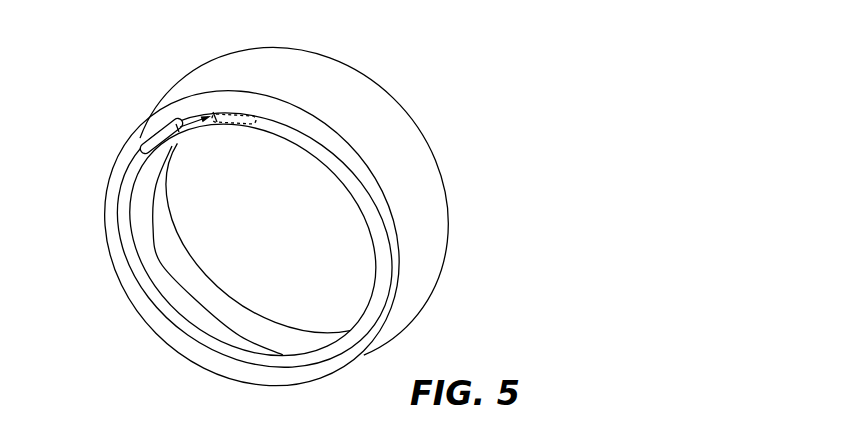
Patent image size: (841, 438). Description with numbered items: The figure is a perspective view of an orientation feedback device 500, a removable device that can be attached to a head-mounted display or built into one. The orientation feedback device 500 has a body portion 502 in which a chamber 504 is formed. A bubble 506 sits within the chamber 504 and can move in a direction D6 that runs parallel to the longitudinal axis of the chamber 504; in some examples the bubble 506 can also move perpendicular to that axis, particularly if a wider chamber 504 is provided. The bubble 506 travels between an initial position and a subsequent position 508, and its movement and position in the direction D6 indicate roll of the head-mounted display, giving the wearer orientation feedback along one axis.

The orientation feedback device 500 is at (259, 223).
The body portion 502 is at (112, 193).
The chamber 504 is at (165, 305).
The bubble 506 is at (150, 142).
The subsequent position 508 is at (240, 118).
The direction D6 is at (186, 128).